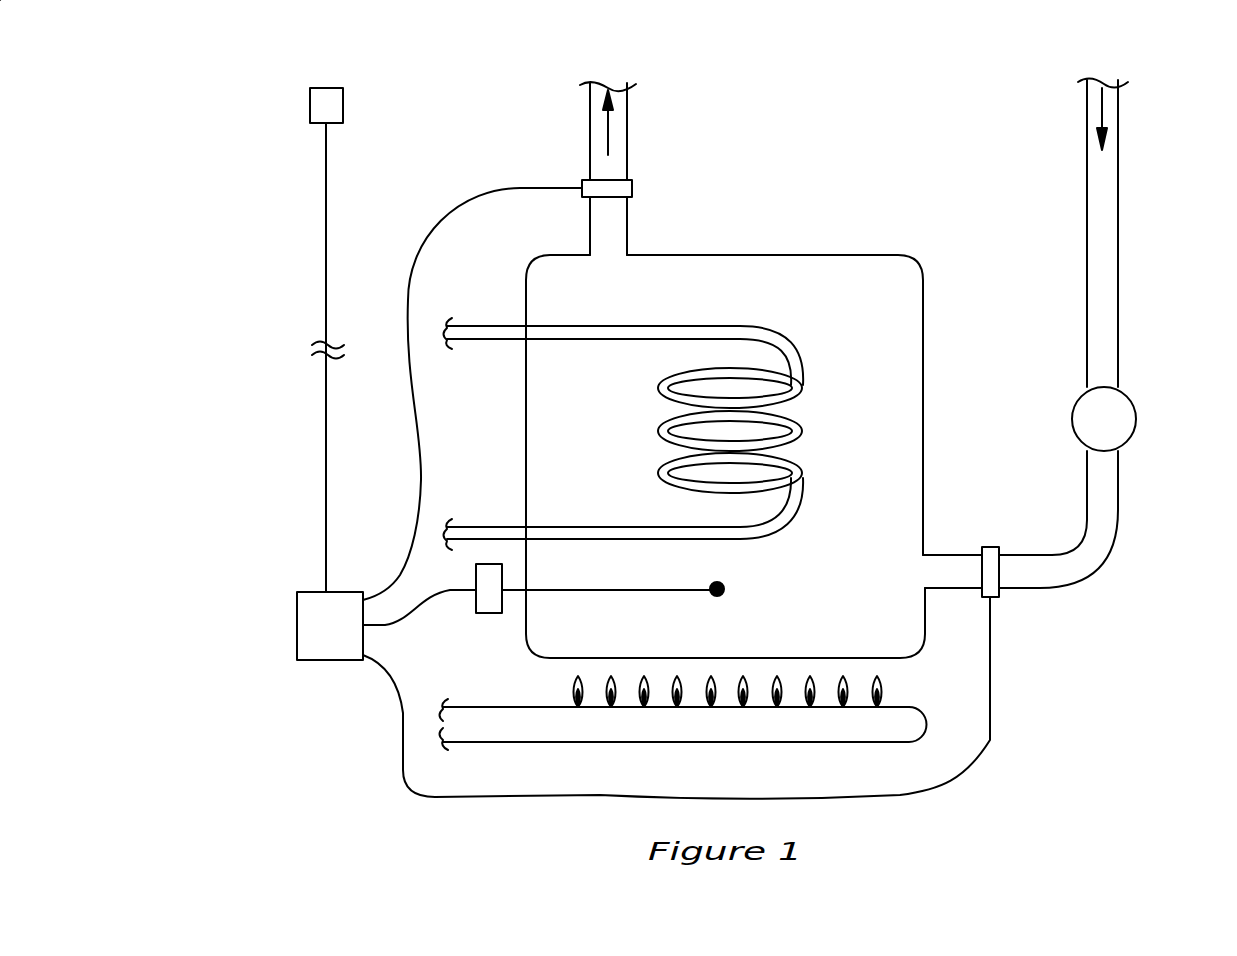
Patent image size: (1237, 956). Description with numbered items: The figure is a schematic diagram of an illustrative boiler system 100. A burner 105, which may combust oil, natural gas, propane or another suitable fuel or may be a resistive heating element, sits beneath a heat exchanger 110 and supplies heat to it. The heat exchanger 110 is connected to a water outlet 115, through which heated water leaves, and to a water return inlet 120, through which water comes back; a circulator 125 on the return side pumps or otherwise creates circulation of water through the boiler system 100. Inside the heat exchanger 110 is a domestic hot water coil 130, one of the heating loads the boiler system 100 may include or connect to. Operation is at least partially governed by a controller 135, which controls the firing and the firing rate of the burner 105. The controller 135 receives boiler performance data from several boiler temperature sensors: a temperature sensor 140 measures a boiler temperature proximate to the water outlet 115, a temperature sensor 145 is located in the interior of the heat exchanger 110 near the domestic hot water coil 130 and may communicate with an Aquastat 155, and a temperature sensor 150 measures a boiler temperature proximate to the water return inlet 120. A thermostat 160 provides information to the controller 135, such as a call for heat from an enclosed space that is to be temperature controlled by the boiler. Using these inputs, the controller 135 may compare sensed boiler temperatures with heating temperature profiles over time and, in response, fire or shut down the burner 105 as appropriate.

The boiler system 100 is at (925, 82).
The burner 105 is at (703, 733).
The heat exchanger 110 is at (901, 257).
The water outlet 115 is at (618, 128).
The water return inlet 120 is at (1104, 547).
The circulator 125 is at (1129, 419).
The domestic hot water coil 130 is at (783, 345).
The controller 135 is at (297, 627).
The temperature sensor 140 is at (632, 188).
The temperature sensor 145 is at (724, 584).
The temperature sensor 150 is at (990, 547).
The Aquastat 155 is at (490, 613).
The thermostat 160 is at (310, 104).